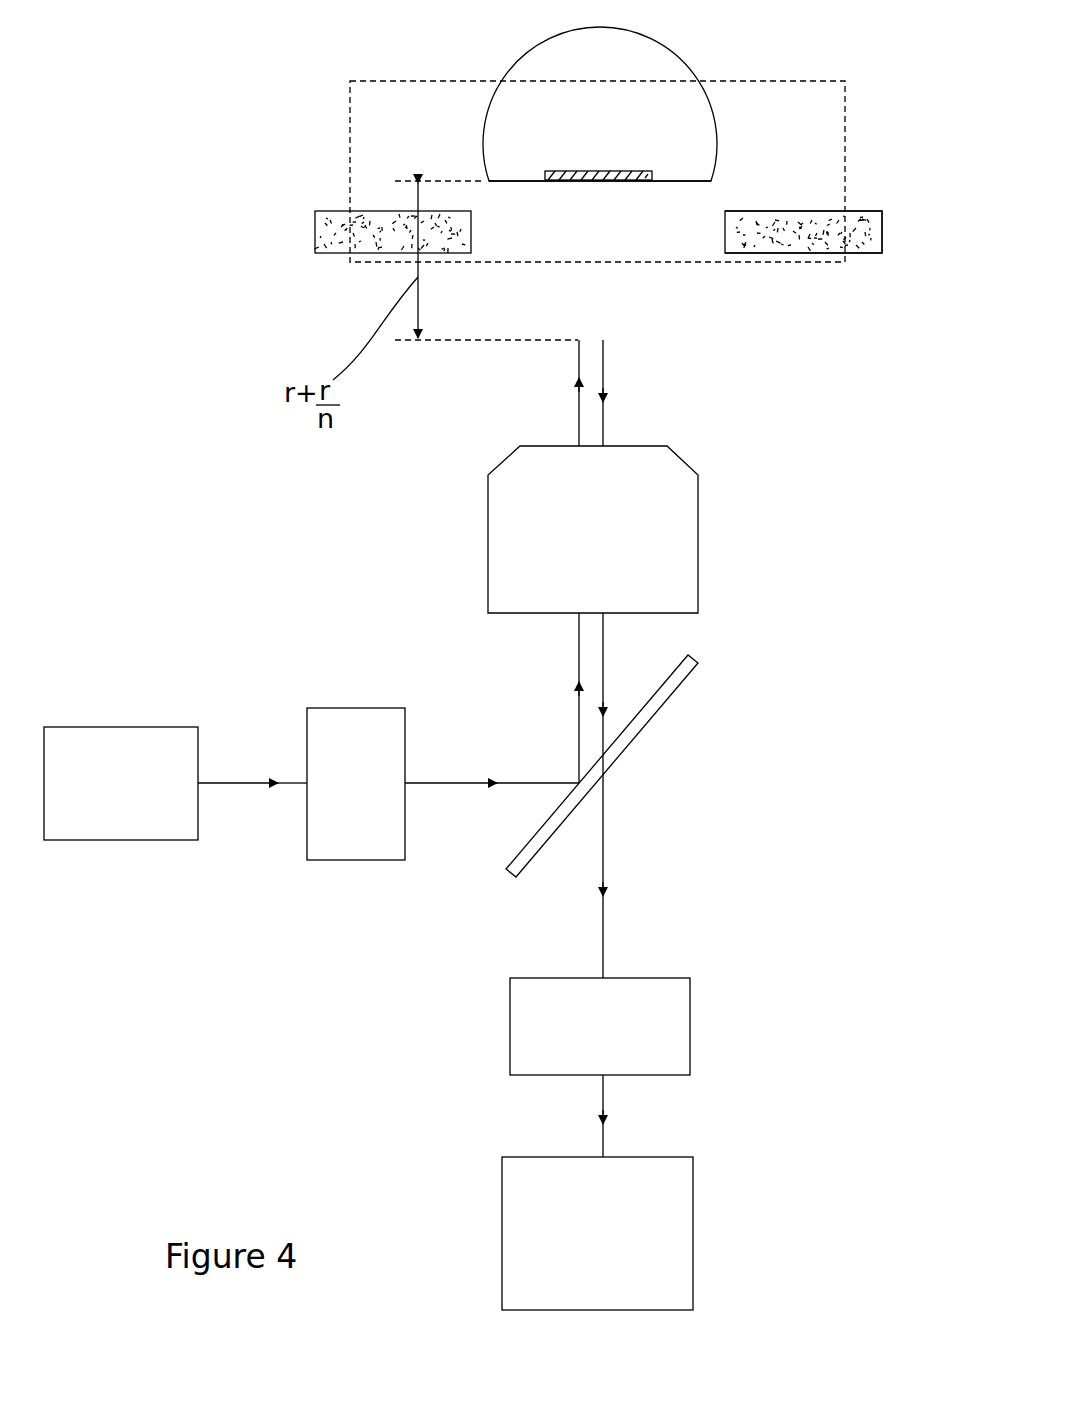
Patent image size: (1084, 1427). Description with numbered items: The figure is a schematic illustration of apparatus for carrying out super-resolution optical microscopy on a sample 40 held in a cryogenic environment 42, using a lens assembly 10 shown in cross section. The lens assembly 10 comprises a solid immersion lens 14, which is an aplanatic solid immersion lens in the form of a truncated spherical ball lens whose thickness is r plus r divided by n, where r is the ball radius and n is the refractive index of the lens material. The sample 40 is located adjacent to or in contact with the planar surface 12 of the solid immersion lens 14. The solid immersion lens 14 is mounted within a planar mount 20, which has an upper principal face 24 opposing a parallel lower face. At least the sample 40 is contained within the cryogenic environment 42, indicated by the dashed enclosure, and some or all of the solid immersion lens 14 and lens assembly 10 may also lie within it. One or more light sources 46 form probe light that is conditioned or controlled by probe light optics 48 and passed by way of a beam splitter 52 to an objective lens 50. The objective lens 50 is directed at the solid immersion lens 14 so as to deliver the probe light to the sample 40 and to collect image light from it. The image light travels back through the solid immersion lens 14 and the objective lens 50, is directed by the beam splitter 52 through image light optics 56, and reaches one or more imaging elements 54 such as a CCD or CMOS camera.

The lens assembly 10 is at (437, 117).
The planar surface 12 is at (693, 181).
The solid immersion lens 14 is at (686, 302).
The planar mount 20 is at (882, 224).
The principal face 24 is at (822, 212).
The sample 40 is at (620, 171).
The cryogenic environment 42 is at (797, 81).
The light source 46 is at (140, 727).
The probe light optics 48 is at (358, 708).
The objective lens 50 is at (698, 530).
The beam splitter 52 is at (642, 732).
The imaging element 54 is at (693, 1207).
The image light optics 56 is at (690, 1013).